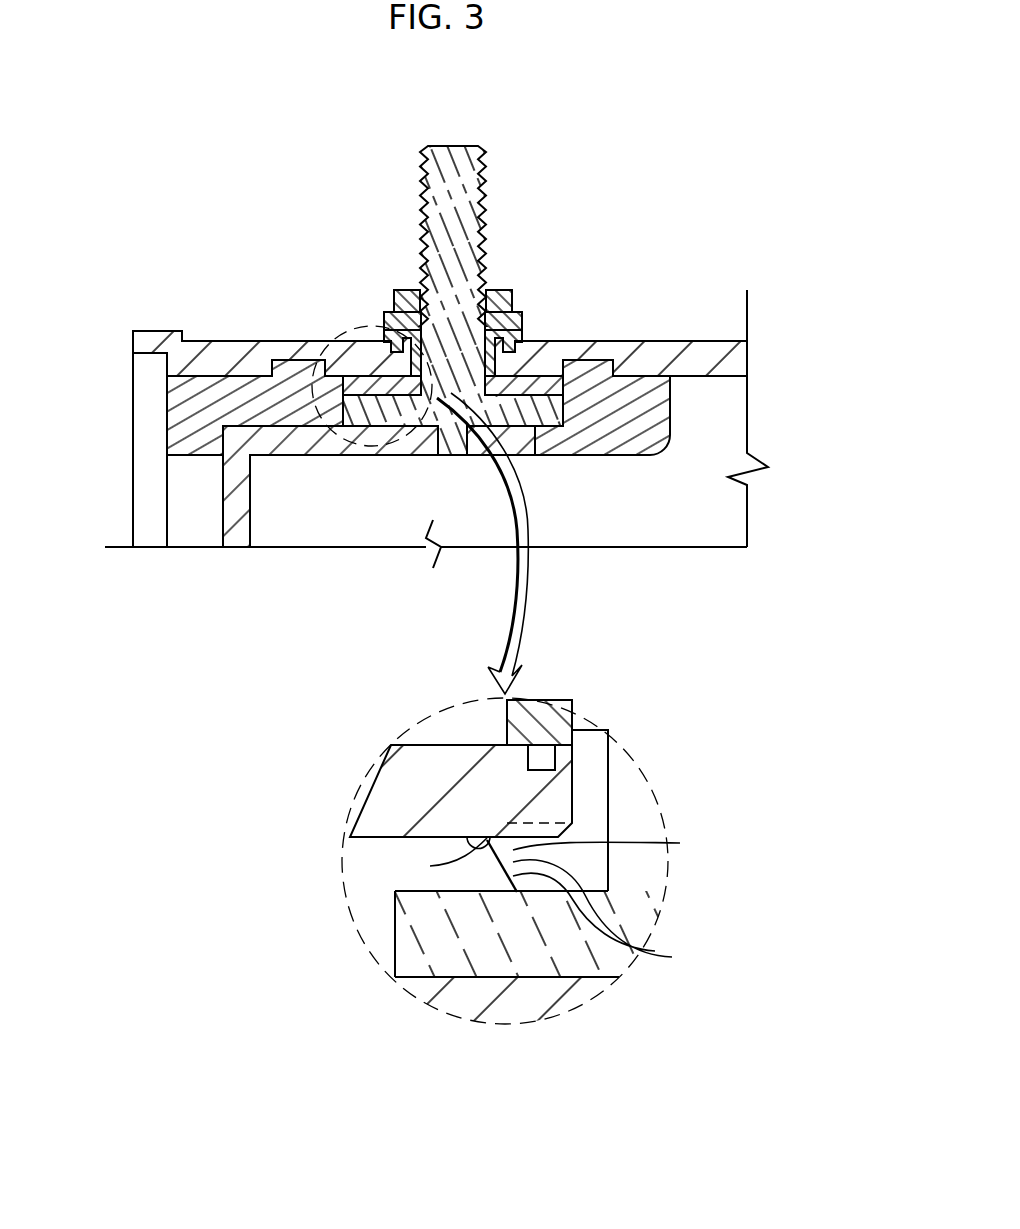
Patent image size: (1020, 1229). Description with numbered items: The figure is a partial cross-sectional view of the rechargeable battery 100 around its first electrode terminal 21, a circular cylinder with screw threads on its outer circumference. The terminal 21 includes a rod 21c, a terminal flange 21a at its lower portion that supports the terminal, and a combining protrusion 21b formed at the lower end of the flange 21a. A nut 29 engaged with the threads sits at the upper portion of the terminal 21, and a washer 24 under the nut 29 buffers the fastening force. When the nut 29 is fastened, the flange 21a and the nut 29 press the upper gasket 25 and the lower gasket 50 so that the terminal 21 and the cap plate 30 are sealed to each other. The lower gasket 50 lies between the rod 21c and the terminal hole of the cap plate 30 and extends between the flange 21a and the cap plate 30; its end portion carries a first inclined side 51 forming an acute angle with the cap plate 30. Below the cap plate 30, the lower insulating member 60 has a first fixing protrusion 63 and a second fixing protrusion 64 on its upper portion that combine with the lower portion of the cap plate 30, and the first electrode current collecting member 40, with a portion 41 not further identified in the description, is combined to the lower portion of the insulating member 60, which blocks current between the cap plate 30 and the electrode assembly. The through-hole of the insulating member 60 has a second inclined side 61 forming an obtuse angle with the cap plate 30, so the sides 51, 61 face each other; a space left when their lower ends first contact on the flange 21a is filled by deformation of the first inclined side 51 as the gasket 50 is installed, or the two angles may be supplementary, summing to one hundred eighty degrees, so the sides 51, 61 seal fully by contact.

The mounting structure 100 is at (331, 139).
The first electrode terminal 21 is at (526, 617).
The terminal flange 21a is at (548, 412).
The combining protrusion 21b is at (458, 432).
The rod 21c is at (420, 212).
The washer 24 is at (510, 321).
The upper gasket 25 is at (520, 346).
The nut 29 is at (500, 290).
The cap plate 30 is at (690, 357).
The first electrode current collecting member 40 is at (212, 488).
The base plate portion 41 is at (297, 442).
The lower gasket 50 is at (398, 346).
The first inclined side 51 is at (380, 385).
The lower insulating member 60 is at (164, 402).
The second inclined side 61 is at (370, 426).
The first fixing protrusion 63 is at (300, 365).
The second fixing protrusion 64 is at (597, 363).